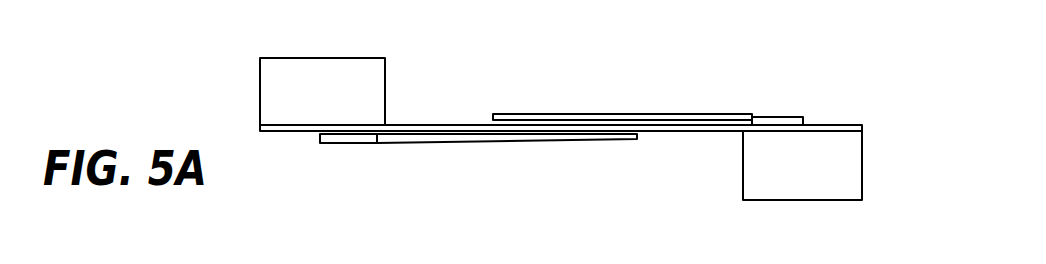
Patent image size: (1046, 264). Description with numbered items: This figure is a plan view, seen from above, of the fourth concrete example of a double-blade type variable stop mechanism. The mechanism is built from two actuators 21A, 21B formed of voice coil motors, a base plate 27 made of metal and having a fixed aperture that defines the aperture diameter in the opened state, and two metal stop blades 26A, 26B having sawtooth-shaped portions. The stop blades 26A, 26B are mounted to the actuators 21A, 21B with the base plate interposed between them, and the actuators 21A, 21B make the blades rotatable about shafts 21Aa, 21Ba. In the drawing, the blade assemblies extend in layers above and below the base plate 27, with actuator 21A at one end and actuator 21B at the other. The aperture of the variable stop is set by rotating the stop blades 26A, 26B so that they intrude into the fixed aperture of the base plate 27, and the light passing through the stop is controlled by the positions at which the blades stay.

The actuator 21A is at (340, 74).
The shaft 21Aa is at (349, 146).
The actuator 21B is at (796, 192).
The shaft 21Ba is at (788, 116).
The stop blade 26A is at (529, 144).
The stop blade 26B is at (537, 113).
The base plate 27 is at (678, 133).